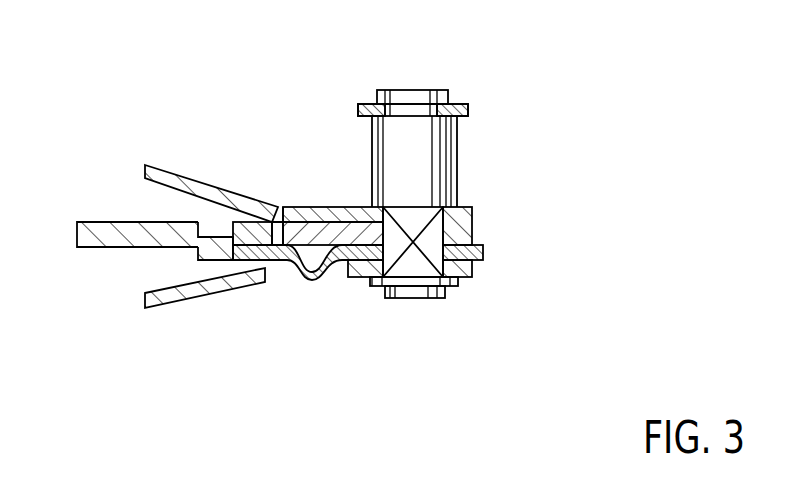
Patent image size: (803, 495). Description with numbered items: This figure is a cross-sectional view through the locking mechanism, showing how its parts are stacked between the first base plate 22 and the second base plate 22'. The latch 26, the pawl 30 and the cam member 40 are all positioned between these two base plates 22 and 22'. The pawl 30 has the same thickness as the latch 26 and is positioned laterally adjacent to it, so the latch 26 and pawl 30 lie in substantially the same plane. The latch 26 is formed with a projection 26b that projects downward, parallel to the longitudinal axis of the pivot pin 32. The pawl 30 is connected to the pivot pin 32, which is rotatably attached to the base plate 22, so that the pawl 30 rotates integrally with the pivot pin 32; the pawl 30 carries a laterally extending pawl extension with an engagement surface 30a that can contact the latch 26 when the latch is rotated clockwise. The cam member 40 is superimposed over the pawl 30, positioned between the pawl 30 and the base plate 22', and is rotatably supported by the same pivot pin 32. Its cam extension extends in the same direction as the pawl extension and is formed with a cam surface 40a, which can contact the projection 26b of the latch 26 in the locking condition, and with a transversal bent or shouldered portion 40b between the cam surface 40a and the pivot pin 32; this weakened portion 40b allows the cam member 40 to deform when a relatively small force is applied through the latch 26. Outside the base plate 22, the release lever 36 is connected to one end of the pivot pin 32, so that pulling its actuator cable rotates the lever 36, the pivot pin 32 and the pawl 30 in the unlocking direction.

The first base plate 22 is at (211, 154).
The second base plate 22' is at (205, 330).
The latch 26 is at (122, 230).
The projection 26b is at (193, 253).
The pawl 30 is at (310, 207).
The engagement surface 30a is at (248, 224).
The pivot pin 32 is at (432, 157).
The release lever 36 is at (462, 104).
The cam member 40 is at (483, 250).
The cam surface 40a is at (230, 256).
The bent portion 40b is at (310, 279).